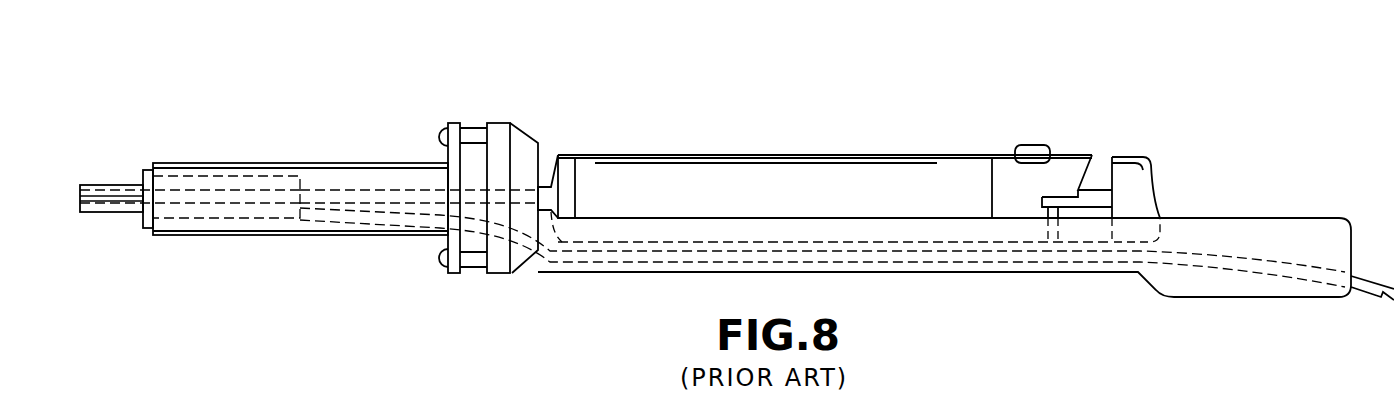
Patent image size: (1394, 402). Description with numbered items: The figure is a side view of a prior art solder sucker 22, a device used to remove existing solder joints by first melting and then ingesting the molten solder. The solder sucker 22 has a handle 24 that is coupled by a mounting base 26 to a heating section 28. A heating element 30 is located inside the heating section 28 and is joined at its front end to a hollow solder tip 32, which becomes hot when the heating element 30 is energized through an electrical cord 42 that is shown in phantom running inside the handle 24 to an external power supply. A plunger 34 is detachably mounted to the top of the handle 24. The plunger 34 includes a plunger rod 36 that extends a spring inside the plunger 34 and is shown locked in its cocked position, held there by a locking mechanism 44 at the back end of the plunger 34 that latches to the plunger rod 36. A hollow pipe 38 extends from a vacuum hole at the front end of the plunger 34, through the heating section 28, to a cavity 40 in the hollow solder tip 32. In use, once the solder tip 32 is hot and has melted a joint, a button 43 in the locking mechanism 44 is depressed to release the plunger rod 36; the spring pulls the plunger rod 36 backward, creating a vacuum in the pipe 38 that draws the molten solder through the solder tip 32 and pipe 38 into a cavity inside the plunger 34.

The solder sucker 22 is at (777, 112).
The handle 24 is at (950, 272).
The mounting base 26 is at (503, 123).
The heating section 28 is at (297, 163).
The heating element 30 is at (200, 176).
The hollow solder tip 32 is at (110, 185).
The plunger 34 is at (890, 172).
The plunger rod 36 is at (1102, 190).
The hollow pipe 38 is at (368, 180).
The cavity 40 is at (108, 213).
The electrical cord 42 is at (386, 230).
The button 43 is at (1030, 143).
The locking mechanism 44 is at (1049, 114).